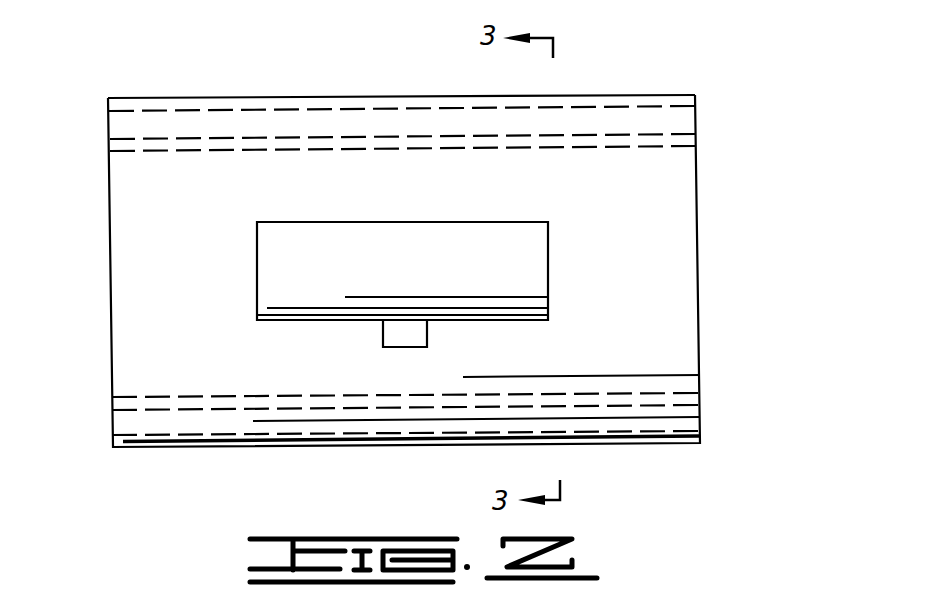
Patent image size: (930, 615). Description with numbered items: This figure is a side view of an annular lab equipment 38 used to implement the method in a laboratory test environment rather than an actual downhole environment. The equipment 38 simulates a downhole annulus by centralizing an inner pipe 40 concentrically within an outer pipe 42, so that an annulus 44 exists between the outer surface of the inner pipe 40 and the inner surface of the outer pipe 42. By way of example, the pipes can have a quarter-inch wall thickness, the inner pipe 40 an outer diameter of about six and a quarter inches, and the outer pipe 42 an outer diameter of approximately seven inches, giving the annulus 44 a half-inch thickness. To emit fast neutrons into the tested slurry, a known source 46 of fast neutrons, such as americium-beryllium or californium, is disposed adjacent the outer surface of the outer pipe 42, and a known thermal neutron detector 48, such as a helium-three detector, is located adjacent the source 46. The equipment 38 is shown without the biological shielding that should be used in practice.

The annular lab equipment 38 is at (668, 42).
The inner pipe 40 is at (657, 138).
The outer pipe 42 is at (558, 95).
The annulus 44 is at (160, 123).
The source of fast neutrons 46 is at (412, 335).
The thermal neutron detector 48 is at (480, 230).